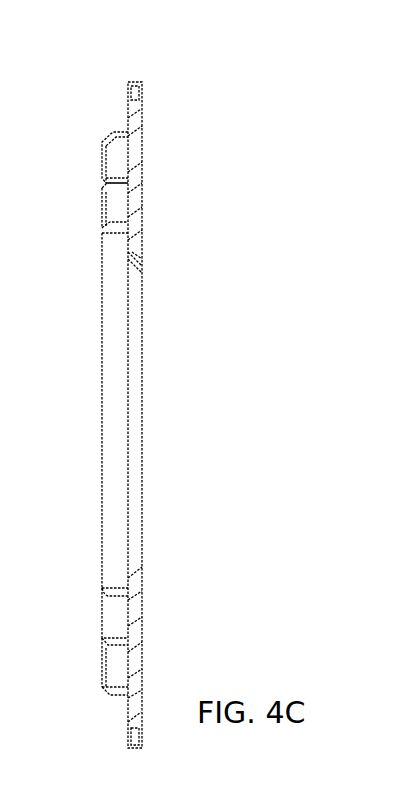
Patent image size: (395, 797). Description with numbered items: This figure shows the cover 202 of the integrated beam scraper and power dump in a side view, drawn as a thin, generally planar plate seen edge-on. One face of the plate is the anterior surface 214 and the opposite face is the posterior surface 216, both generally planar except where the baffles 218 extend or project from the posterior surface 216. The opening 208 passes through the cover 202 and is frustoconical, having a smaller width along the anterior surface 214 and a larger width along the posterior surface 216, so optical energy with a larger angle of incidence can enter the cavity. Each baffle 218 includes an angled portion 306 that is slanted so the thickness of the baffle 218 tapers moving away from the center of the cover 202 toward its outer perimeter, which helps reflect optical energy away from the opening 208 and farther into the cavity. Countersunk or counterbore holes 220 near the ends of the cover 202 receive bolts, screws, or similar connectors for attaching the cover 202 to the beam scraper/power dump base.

The cover 202 is at (126, 49).
The opening 208 is at (146, 533).
The anterior surface 214 is at (146, 208).
The posterior surface 216 is at (125, 117).
The baffle 218 is at (118, 607).
The countersunk or counterbore hole 220 is at (124, 738).
The angled portion 306 is at (101, 227).